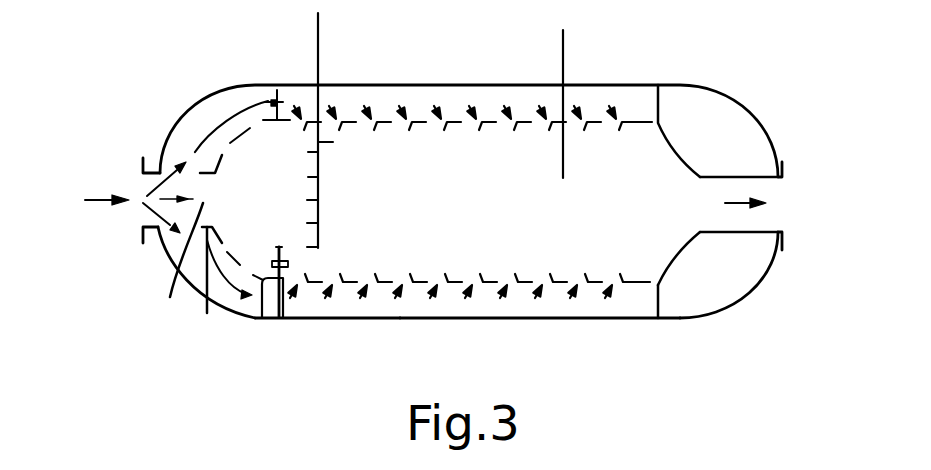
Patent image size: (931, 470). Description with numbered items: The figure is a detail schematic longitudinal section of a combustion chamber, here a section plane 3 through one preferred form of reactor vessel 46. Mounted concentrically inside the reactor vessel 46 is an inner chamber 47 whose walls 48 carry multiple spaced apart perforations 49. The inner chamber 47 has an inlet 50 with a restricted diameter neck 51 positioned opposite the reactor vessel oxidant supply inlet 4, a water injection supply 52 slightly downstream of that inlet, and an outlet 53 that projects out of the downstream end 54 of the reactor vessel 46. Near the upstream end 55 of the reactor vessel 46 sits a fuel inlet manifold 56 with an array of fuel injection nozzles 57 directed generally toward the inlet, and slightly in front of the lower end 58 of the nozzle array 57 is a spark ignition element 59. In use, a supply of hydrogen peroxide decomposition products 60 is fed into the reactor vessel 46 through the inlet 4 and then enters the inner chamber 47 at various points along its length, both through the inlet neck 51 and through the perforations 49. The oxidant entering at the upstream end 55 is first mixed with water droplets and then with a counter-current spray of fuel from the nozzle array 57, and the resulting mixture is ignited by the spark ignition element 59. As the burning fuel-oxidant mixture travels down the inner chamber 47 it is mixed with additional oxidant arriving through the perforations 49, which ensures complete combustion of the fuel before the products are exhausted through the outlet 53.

The section plane 3 is at (317, 53).
The reactor vessel oxidant supply inlet 4 is at (140, 222).
The reactor vessel 46 is at (473, 320).
The inner chamber 47 is at (635, 288).
The walls 48 is at (600, 120).
The perforations 49 is at (577, 290).
The inlet 50 is at (170, 269).
The restricted diameter neck 51 is at (209, 290).
The water injection supply 52 is at (562, 58).
The outlet 53 is at (770, 213).
The downstream end 54 is at (748, 283).
The upstream end 55 is at (167, 265).
The fuel inlet manifold 56 is at (333, 142).
The fuel injection nozzles 57 is at (312, 223).
The lower end 58 is at (360, 320).
The spark ignition element 59 is at (262, 317).
The hydrogen peroxide decomposition products 60 is at (100, 197).